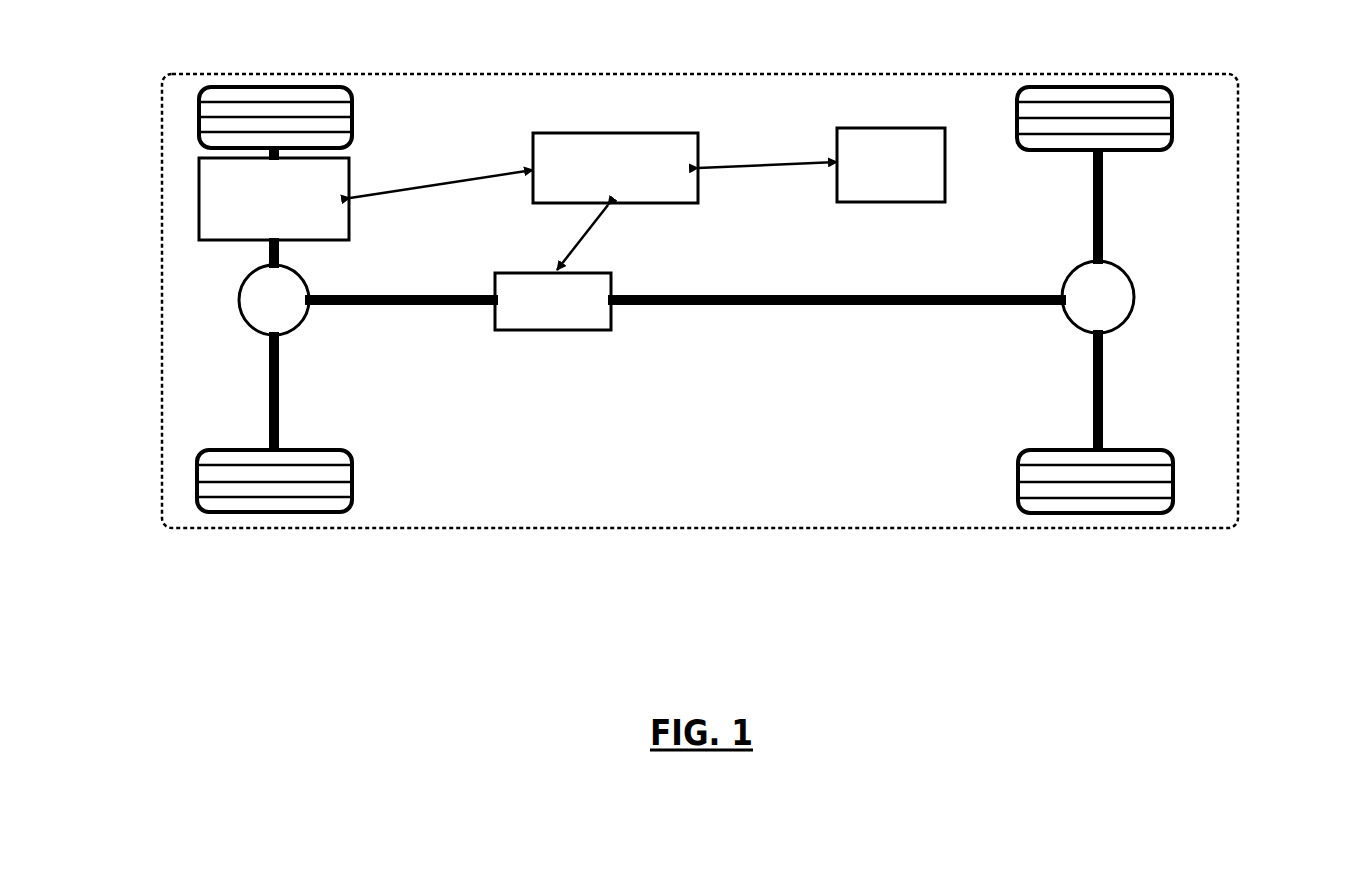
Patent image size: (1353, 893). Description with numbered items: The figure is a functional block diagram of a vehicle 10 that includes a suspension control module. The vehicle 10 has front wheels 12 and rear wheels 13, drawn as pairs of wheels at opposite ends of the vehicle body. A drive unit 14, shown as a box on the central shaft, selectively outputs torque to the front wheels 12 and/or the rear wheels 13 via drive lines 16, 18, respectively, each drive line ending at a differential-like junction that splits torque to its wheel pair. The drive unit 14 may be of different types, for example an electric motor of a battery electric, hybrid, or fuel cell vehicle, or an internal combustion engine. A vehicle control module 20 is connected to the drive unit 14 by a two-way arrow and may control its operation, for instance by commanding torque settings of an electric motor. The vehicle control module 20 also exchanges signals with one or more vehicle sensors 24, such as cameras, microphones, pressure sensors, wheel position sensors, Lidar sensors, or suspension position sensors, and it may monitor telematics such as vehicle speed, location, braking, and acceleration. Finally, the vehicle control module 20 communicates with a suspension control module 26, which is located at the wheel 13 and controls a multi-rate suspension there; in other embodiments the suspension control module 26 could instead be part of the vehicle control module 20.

The vehicle 10 is at (1288, 76).
The front wheels 12 is at (1075, 87).
The rear wheels 13 is at (248, 87).
The drive unit 14 is at (508, 330).
The drive line 16 is at (1135, 297).
The drive line 18 is at (245, 314).
The vehicle control module 20 is at (615, 133).
The vehicle sensors 24 is at (875, 202).
The suspension control module 26 is at (199, 198).